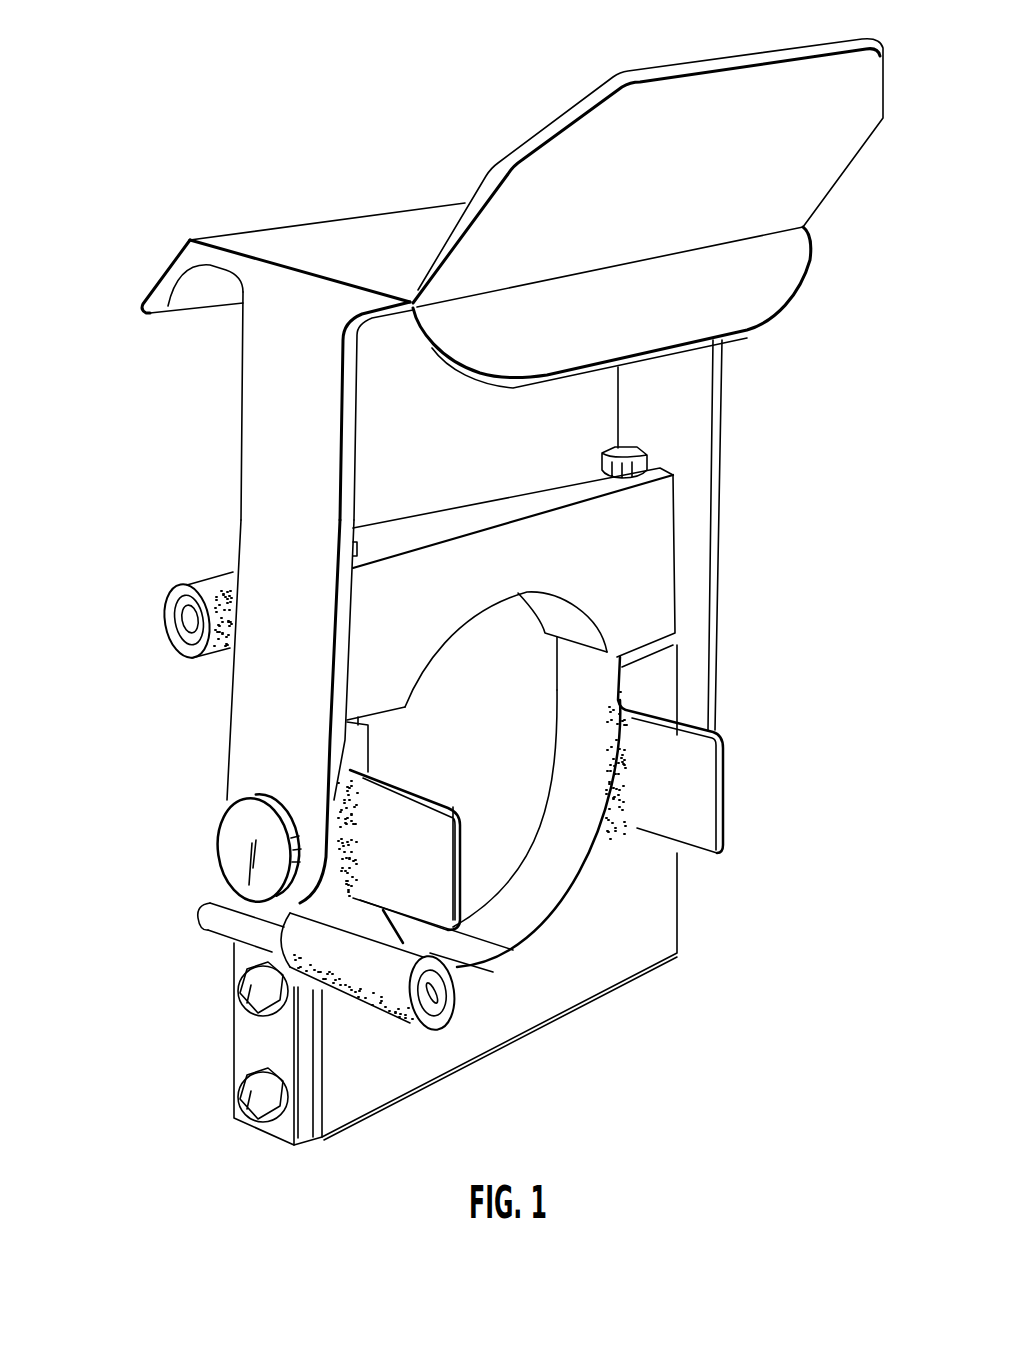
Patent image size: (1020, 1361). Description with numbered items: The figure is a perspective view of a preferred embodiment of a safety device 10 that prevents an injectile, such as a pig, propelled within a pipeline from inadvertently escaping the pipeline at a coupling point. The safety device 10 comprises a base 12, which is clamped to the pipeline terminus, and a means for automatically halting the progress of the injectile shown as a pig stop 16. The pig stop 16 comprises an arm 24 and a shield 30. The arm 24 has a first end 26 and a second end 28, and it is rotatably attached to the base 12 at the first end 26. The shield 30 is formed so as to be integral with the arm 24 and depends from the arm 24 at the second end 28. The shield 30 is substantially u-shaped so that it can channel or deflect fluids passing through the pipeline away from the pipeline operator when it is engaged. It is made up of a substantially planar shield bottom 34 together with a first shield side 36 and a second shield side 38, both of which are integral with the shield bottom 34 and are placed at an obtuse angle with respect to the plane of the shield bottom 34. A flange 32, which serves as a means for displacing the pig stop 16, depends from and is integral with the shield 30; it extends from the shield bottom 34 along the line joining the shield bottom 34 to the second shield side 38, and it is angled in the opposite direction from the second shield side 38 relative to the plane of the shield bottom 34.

The safety device 10 is at (177, 177).
The base 12 is at (375, 1080).
The pig stop 16 is at (79, 315).
The arm 24 is at (263, 711).
The first end 26 is at (223, 889).
The second end 28 is at (243, 360).
The shield 30 is at (134, 307).
The flange 32 is at (598, 137).
The shield bottom 34 is at (423, 222).
The first shield side 36 is at (180, 290).
The second shield side 38 is at (657, 312).